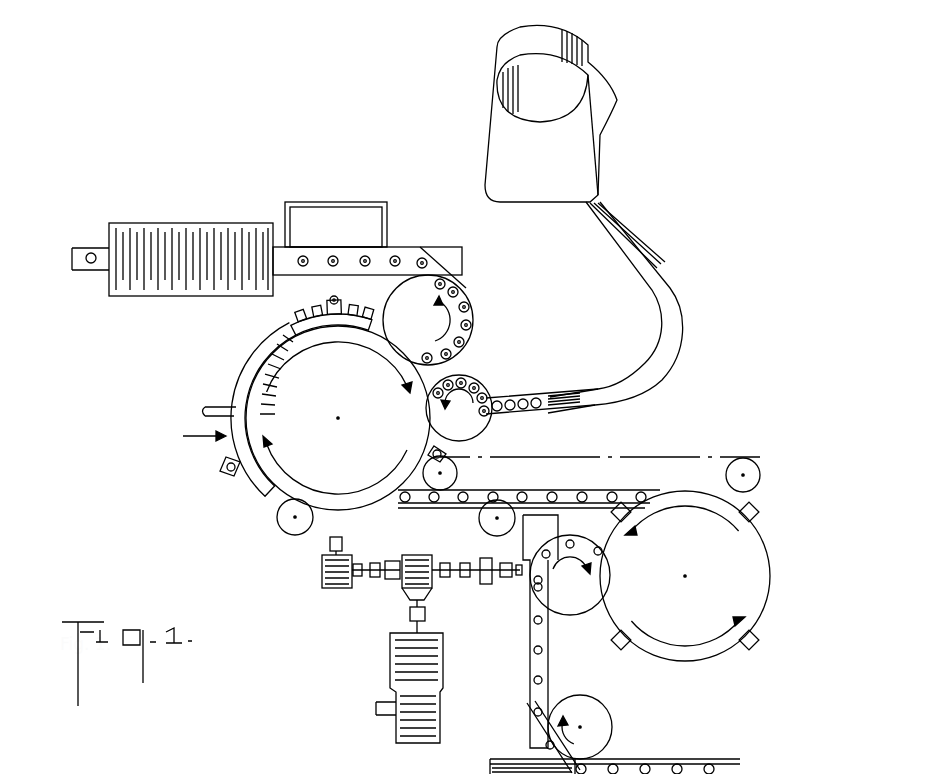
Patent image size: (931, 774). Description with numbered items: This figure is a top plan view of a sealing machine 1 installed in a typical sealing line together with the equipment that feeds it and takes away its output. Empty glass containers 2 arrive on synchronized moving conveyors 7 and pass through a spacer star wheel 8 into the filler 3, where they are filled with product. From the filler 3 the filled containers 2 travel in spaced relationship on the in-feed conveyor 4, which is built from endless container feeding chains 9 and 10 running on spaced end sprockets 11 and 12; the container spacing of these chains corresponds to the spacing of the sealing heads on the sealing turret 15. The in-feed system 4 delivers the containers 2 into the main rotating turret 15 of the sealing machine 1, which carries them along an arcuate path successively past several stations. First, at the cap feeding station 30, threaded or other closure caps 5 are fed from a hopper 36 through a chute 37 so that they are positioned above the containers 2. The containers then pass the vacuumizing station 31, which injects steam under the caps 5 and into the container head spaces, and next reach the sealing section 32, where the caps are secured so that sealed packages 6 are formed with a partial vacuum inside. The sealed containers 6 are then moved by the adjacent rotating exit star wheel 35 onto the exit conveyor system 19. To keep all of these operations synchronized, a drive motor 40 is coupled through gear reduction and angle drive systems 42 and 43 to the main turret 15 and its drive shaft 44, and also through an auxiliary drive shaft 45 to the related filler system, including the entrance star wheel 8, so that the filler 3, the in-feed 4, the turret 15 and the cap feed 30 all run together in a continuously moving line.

The sealing machine 1 is at (193, 436).
The glass containers 2 is at (583, 490).
The filler 3 is at (694, 564).
The in-feed conveyor 4 is at (698, 450).
The closure caps 5 is at (542, 404).
The sealed packages 6 is at (396, 258).
The synchronized moving conveyors 7 is at (560, 696).
The spacer star wheel 8 is at (584, 592).
The container feeding chain 9 is at (597, 456).
The container feeding chain 10 is at (412, 513).
The end sprocket 11 is at (452, 472).
The end sprocket 12 is at (290, 519).
The sealing turret 15 is at (350, 449).
The exit conveyor system 19 is at (468, 246).
The cap feeding station 30 is at (482, 377).
The vacuumizing station 31 is at (262, 345).
The sealing section 32 is at (307, 318).
The exit star wheel 35 is at (430, 318).
The hopper 36 is at (560, 174).
The chute 37 is at (637, 250).
The drive motor 40 is at (446, 670).
The gear reduction and angle drive system 42 is at (408, 583).
The gear reduction and angle drive system 43 is at (330, 578).
The drive shaft 44 is at (330, 545).
The auxiliary drive shaft 45 is at (466, 584).